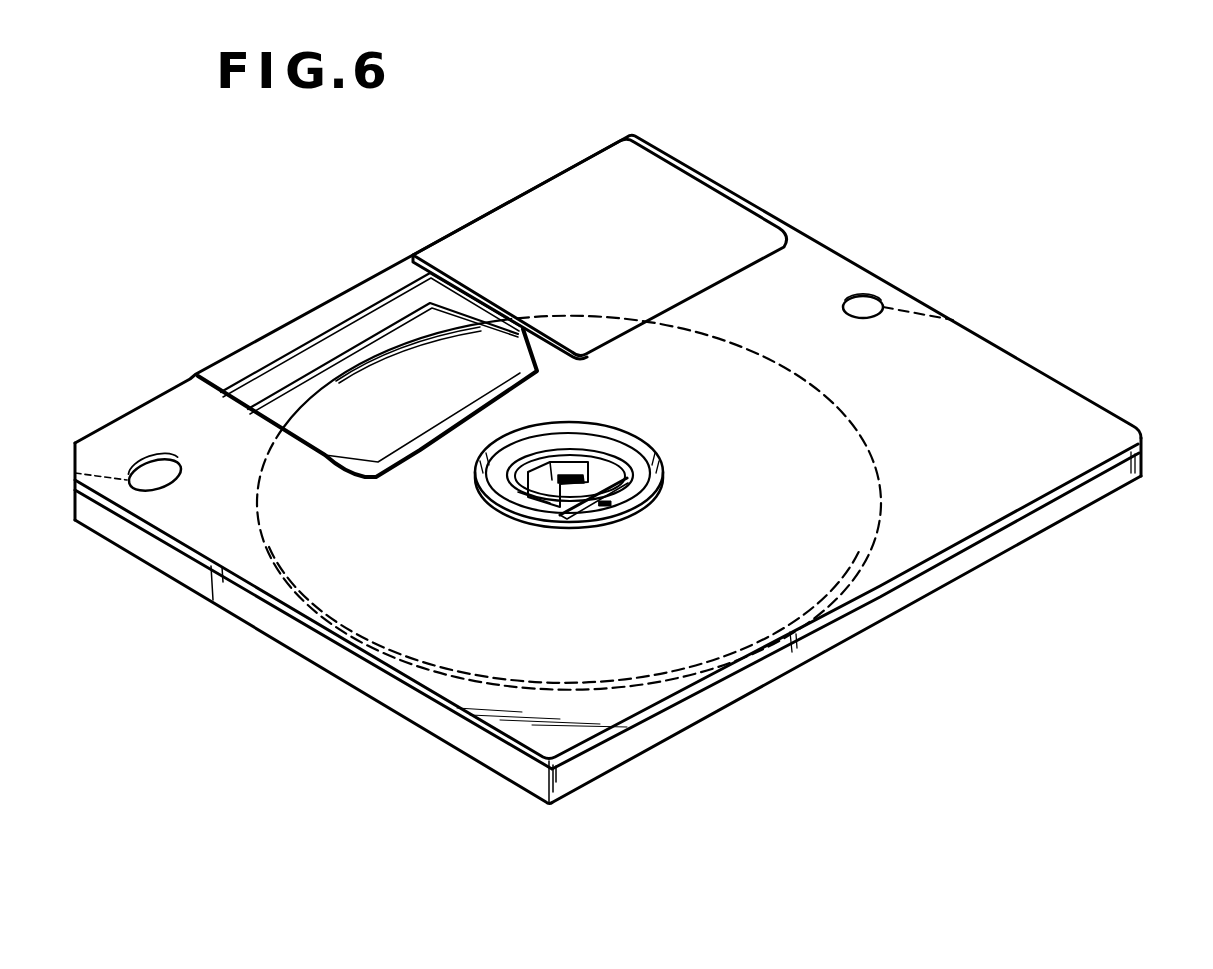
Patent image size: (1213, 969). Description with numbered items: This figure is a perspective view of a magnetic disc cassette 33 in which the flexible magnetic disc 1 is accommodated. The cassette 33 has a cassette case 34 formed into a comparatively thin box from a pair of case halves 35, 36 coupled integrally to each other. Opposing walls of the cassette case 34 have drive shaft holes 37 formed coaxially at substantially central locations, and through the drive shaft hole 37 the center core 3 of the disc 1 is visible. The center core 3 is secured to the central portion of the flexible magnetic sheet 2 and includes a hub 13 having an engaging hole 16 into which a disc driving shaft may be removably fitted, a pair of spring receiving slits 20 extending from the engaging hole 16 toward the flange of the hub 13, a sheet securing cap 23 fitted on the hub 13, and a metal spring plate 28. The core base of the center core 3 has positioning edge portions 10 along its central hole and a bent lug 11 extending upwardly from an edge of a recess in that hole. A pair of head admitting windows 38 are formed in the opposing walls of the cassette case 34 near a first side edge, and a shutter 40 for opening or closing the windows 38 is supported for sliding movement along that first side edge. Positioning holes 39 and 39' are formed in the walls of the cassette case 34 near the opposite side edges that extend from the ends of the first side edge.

The flexible magnetic disc 1 is at (908, 357).
The flexible magnetic sheet 2 is at (866, 438).
The center core 3 is at (660, 467).
The positioning edge portions 10 is at (521, 513).
The bent lug 11 is at (607, 504).
The hub 13 is at (508, 457).
The engaging hole 16 is at (548, 468).
The spring receiving slits 20 is at (625, 488).
The sheet securing cap 23 is at (497, 488).
The spring plate 28 is at (588, 507).
The magnetic disc cassette 33 is at (1042, 255).
The cassette case 34 is at (1138, 537).
The case half 35 is at (1066, 484).
The case half 36 is at (1047, 517).
The drive shaft holes 37 is at (610, 432).
The head admitting windows 38 is at (284, 363).
The positioning holes 39 is at (130, 429).
The positioning holes 39' is at (898, 265).
The shutter 40 is at (512, 226).